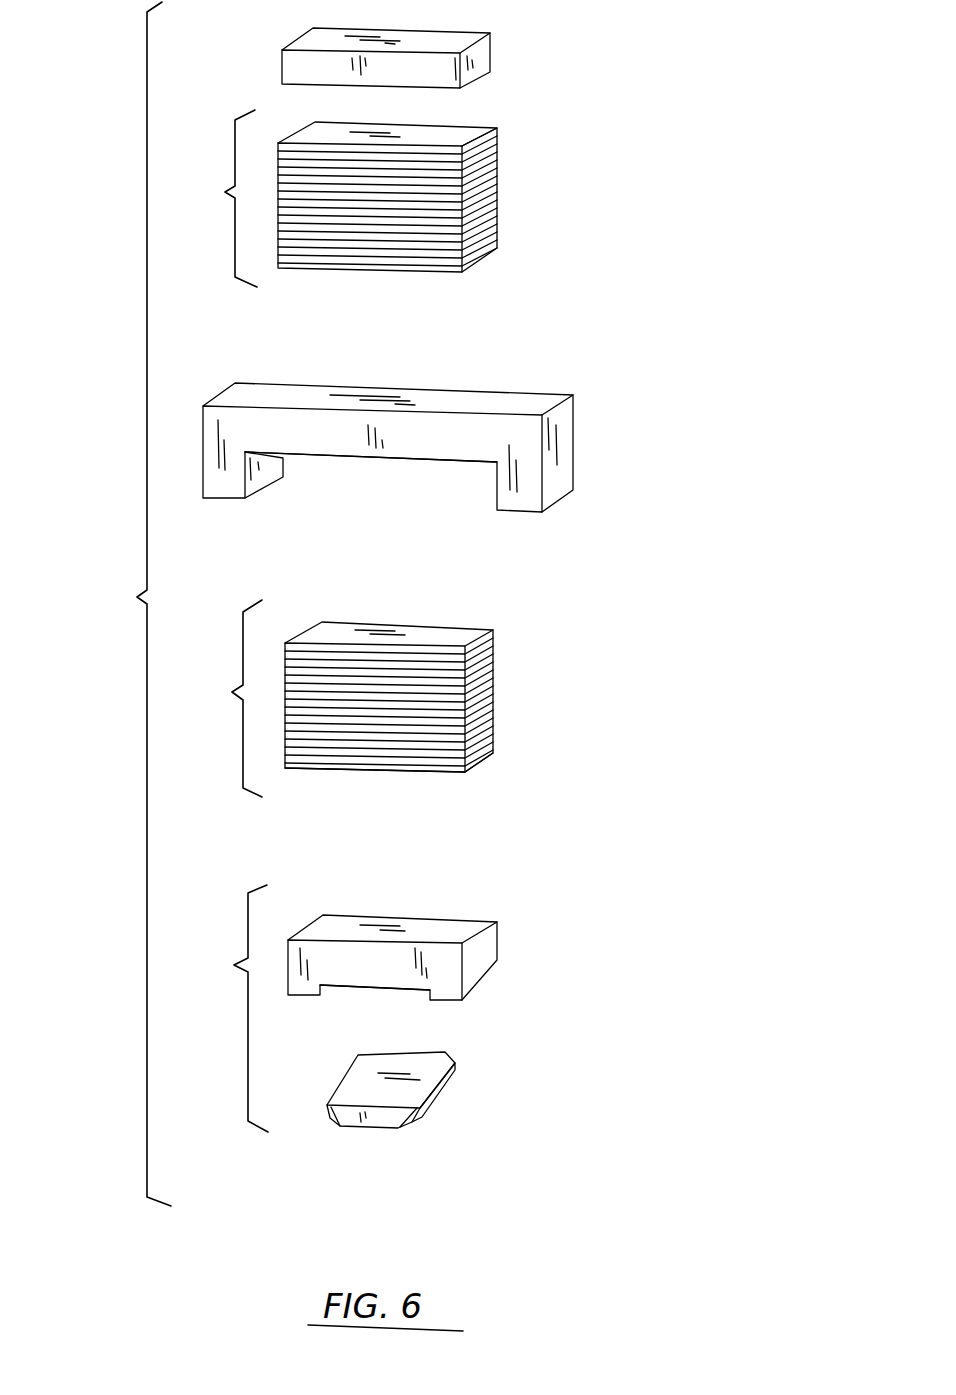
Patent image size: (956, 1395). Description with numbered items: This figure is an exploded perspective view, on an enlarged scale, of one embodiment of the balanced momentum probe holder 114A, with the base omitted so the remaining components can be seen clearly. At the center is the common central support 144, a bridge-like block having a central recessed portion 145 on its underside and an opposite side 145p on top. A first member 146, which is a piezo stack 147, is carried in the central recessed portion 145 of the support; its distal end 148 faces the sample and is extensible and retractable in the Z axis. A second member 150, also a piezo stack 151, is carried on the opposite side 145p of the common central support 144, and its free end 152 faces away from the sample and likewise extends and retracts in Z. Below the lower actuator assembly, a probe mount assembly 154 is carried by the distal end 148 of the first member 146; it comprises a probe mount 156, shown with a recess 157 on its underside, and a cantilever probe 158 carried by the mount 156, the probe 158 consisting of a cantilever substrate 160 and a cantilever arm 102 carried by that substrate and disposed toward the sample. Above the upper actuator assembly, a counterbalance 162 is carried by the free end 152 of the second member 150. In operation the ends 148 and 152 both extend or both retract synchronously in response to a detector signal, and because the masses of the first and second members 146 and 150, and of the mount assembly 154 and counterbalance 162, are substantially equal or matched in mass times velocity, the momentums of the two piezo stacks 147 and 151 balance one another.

The balanced momentum probe holder 114A is at (109, 604).
The counterbalance 162 is at (480, 50).
The second member 150 is at (210, 198).
The free end 152 is at (460, 133).
The piezo stack 151 is at (485, 197).
The common central support 144 is at (567, 448).
The opposite side 145p is at (448, 400).
The central recessed portion 145 is at (333, 456).
The first member 146 is at (217, 698).
The piezo stack 147 is at (487, 697).
The distal end 148 is at (477, 760).
The probe mount assembly 154 is at (220, 1008).
The probe mount 156 is at (482, 947).
The recess of base block 157 is at (358, 987).
The cantilever probe 158 is at (460, 1052).
The cantilever substrate 160 is at (438, 1090).
The cantilever arm 102 is at (370, 1128).